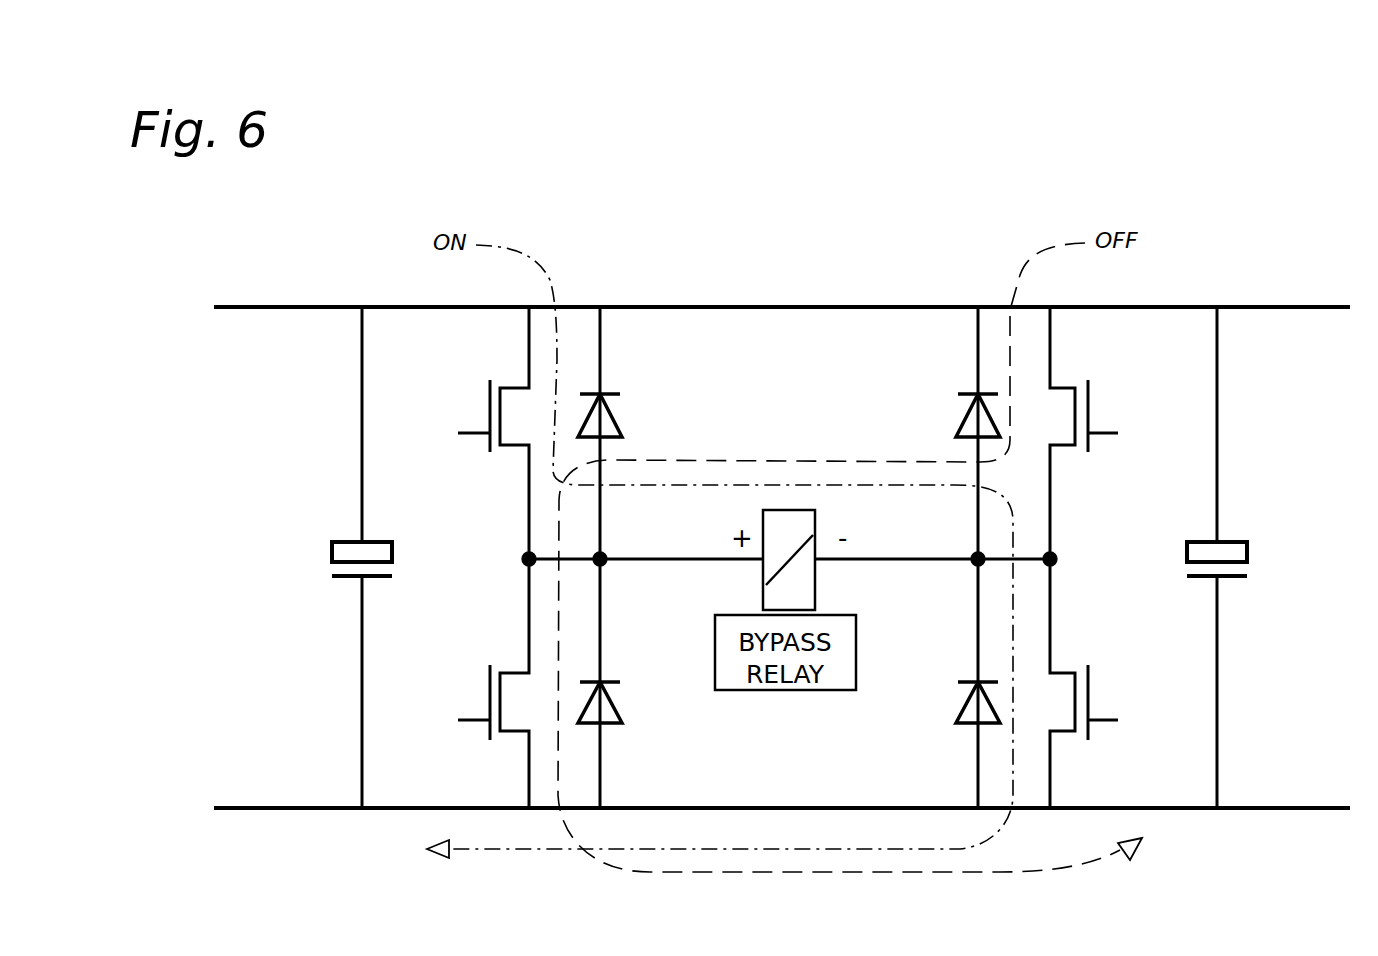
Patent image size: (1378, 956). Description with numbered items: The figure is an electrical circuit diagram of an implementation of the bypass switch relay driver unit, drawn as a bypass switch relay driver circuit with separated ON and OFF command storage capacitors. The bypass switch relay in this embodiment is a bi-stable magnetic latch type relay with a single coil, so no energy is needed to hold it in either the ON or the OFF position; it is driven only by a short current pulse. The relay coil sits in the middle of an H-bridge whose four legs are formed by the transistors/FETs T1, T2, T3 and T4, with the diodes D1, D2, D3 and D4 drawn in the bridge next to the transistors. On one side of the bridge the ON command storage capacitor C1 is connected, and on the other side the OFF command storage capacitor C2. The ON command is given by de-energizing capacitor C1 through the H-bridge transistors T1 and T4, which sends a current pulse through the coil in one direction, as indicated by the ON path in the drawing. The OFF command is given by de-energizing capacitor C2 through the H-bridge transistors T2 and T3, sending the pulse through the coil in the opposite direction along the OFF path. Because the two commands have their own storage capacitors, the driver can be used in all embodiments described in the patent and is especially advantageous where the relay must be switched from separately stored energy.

The H-bridge transistor/FET T1 is at (493, 433).
The H-bridge transistor/FET T2 is at (1084, 433).
The H-bridge transistor/FET T3 is at (493, 683).
The H-bridge transistor/FET T4 is at (1084, 683).
The diode D1 is at (622, 433).
The diode D2 is at (953, 433).
The diode D3 is at (622, 683).
The diode D4 is at (952, 683).
The ON command storage capacitor C1 is at (348, 557).
The OFF command storage capacitor C2 is at (1205, 557).